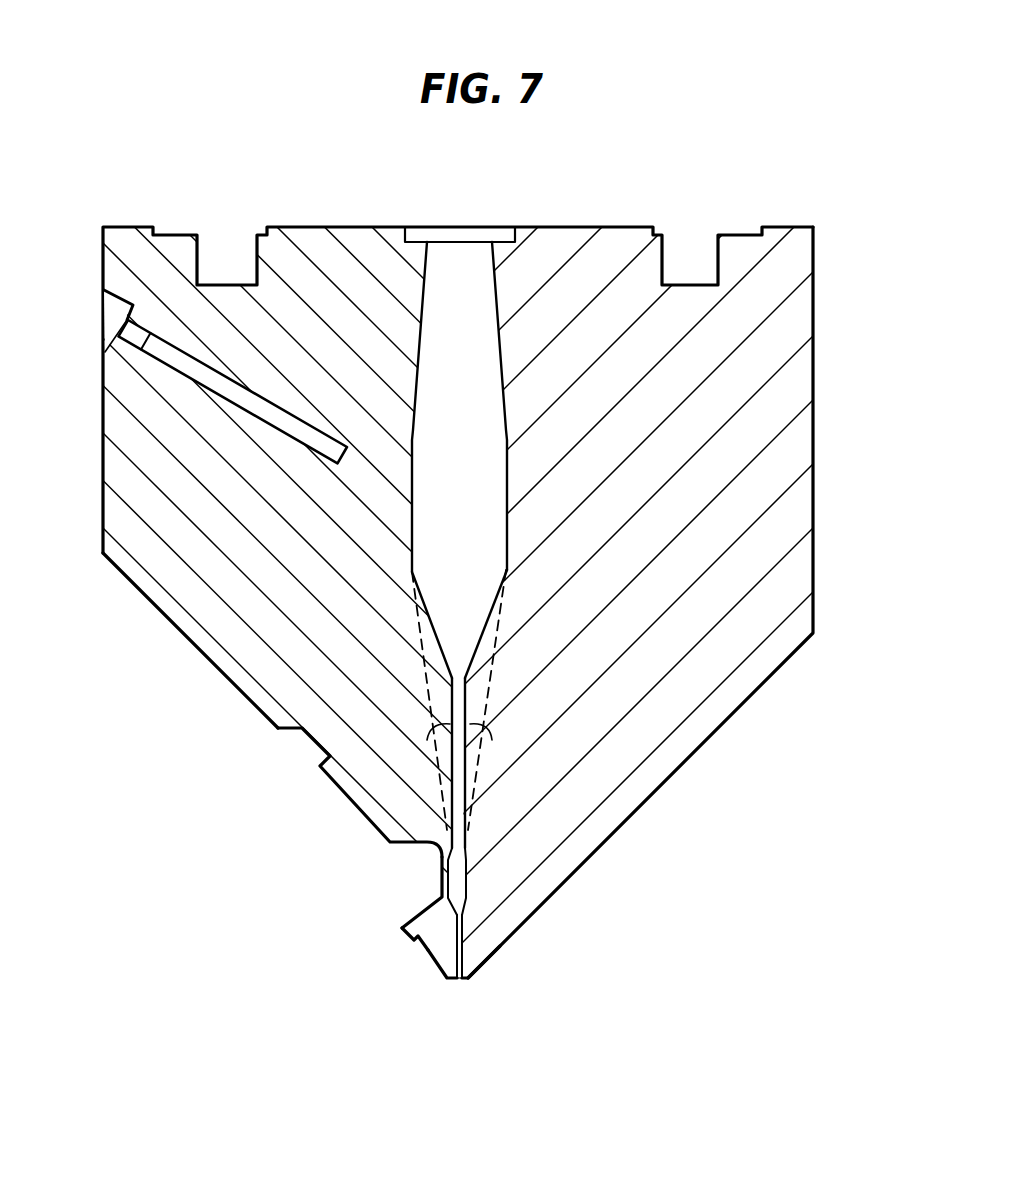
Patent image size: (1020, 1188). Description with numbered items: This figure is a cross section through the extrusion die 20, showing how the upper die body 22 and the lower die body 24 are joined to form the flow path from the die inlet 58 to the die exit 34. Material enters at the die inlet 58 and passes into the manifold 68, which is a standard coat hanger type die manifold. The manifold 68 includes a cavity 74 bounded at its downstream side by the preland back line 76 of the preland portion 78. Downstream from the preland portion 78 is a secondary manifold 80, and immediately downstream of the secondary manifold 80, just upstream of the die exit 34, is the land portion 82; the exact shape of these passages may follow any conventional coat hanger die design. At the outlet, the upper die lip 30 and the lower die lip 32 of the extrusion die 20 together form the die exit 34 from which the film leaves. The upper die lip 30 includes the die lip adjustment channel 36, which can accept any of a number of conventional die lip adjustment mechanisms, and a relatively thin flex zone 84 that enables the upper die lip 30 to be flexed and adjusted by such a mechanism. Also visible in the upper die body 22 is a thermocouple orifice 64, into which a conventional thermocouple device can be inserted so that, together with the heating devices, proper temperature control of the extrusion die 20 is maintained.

The extrusion die 20 is at (850, 348).
The upper die body 22 is at (141, 597).
The lower die body 24 is at (818, 565).
The upper die lip 30 is at (445, 978).
The lower die lip 32 is at (471, 978).
The die exit 34 is at (458, 978).
The die lip adjustment channel 36 is at (415, 945).
The die inlet 58 is at (475, 238).
The thermocouple orifice 64 is at (128, 340).
The manifold 68 is at (250, 698).
The cavity 74 is at (490, 563).
The preland back line 76 is at (465, 680).
The preland portion 78 is at (465, 773).
The secondary manifold 80 is at (456, 888).
The land portion 82 is at (463, 948).
The flex zone 84 is at (440, 868).